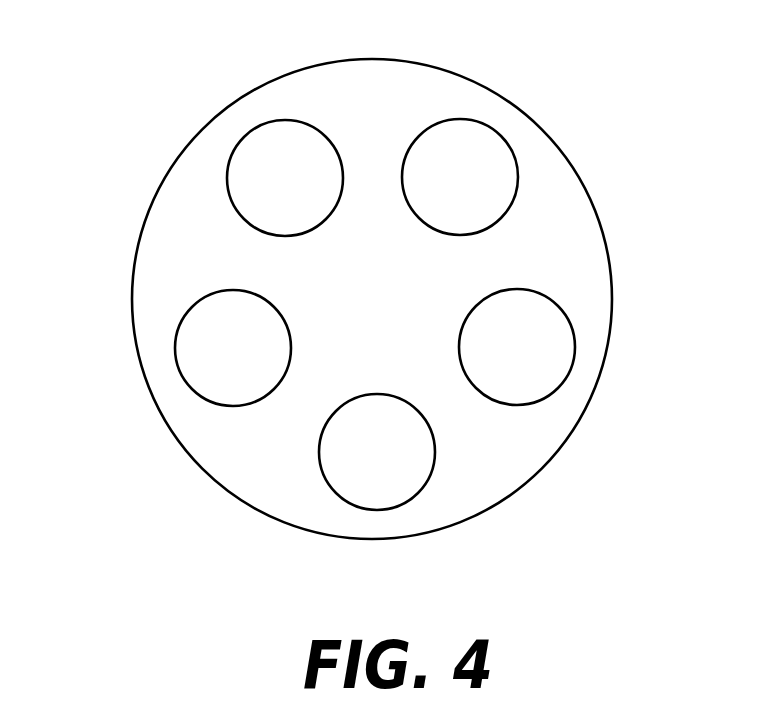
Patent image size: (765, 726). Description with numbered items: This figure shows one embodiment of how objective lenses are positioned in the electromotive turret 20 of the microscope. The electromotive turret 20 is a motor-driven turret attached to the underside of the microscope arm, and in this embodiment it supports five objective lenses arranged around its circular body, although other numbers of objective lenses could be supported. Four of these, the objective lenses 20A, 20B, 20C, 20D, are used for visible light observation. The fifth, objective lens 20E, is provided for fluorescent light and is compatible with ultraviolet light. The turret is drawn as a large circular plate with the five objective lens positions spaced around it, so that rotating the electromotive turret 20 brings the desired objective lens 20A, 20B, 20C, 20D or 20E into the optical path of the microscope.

The electromotive turret 20 is at (490, 90).
The objective lens 20A is at (241, 141).
The objective lens 20B is at (176, 358).
The objective lens 20C is at (333, 492).
The objective lens 20D is at (575, 362).
The objective lens 20E is at (518, 174).